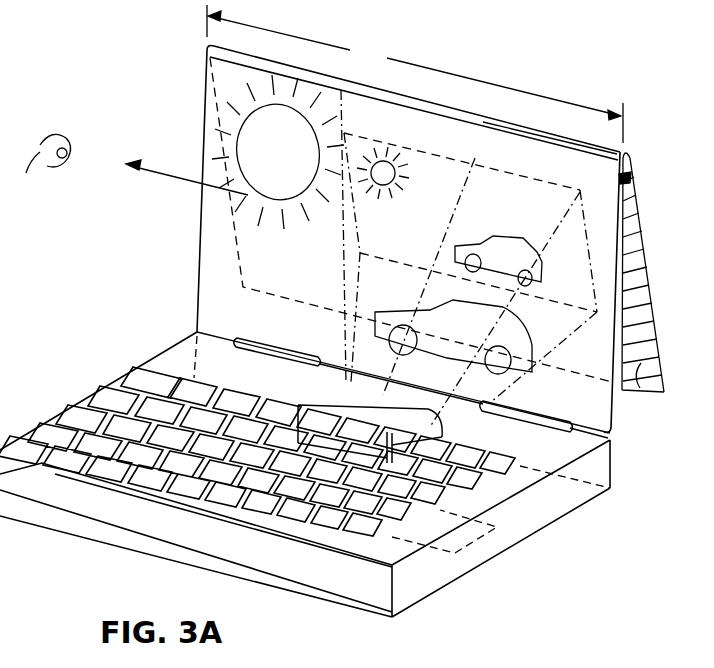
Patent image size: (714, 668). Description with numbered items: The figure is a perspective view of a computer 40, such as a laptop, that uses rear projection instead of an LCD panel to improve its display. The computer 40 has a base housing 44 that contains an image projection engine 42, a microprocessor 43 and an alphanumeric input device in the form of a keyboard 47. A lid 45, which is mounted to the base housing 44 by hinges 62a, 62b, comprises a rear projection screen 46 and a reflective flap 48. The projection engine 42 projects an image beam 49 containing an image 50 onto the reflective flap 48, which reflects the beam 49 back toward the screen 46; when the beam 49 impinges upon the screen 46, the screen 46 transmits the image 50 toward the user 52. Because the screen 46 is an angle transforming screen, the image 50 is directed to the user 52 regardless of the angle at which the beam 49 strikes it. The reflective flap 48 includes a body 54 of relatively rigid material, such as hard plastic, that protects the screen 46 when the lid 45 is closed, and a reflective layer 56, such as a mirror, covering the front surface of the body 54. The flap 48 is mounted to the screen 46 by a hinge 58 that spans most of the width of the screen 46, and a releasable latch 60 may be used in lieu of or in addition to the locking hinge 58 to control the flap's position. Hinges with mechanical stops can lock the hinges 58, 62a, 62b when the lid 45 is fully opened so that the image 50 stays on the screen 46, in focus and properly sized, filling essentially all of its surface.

The computer 40 is at (84, 336).
The image projection engine 42 is at (320, 389).
The microprocessor 43 is at (500, 547).
The base housing 44 is at (116, 546).
The lid 45 is at (200, 248).
The rear projection screen 46 is at (619, 403).
The keyboard 47 is at (64, 398).
The reflective flap 48 is at (652, 277).
The image beam 49 is at (338, 329).
The image 50 is at (370, 139).
The user 52 is at (38, 167).
The body 54 is at (655, 320).
The reflective layer 56 is at (641, 363).
The hinge 58 is at (627, 152).
The releasable latch 60 is at (626, 179).
The hinge 62a is at (259, 348).
The hinge 62b is at (527, 419).